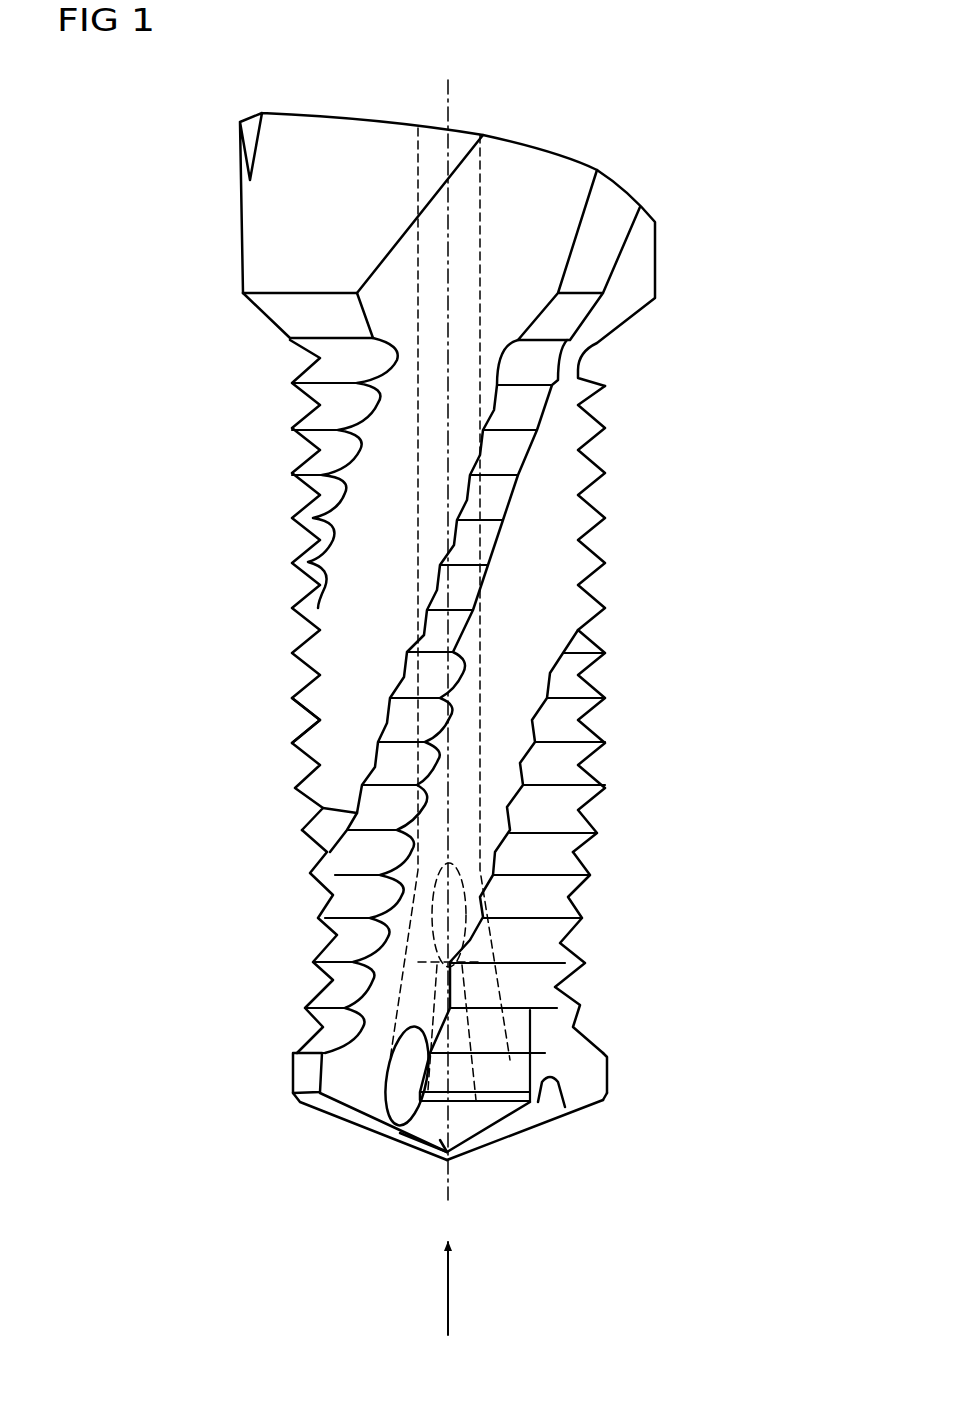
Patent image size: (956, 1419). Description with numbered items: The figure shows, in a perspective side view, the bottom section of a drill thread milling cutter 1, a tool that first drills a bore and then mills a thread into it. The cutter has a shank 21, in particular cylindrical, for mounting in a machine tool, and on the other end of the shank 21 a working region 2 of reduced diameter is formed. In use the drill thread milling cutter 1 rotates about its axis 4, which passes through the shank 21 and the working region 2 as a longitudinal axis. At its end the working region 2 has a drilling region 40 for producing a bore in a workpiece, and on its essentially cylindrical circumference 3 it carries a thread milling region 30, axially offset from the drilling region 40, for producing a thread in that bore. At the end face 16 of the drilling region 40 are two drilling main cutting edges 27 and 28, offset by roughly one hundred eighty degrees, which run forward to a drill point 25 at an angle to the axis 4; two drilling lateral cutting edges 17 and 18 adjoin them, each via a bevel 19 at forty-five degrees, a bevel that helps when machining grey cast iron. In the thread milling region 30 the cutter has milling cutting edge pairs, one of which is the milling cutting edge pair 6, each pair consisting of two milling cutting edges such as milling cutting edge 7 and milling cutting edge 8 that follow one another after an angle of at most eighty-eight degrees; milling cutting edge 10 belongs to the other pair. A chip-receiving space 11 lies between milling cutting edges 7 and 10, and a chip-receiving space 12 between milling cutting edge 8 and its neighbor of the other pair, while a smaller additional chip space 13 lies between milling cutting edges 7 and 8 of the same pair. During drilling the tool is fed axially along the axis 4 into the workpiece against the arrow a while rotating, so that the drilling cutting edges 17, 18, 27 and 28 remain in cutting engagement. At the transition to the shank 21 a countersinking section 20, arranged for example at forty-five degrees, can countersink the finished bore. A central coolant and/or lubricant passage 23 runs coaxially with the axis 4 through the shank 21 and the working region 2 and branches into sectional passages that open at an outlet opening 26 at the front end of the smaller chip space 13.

The drill thread milling cutter 1 is at (167, 134).
The working region 2 is at (272, 688).
The cylindrical circumference 3 is at (289, 738).
The axis 4 is at (450, 1183).
The milling cutting edge pair 6 is at (320, 918).
The milling cutting edge 7 is at (520, 770).
The milling cutting edge 8 is at (355, 813).
The milling cutting edge 10 is at (580, 1003).
The chip-receiving space 11 is at (580, 1077).
The chip-receiving space 12 is at (383, 632).
The additional chip space 13 is at (520, 583).
The end face 16 is at (405, 1156).
The drilling lateral cutting edge 17 is at (293, 1072).
The drilling lateral cutting edge 18 is at (607, 1067).
The bevel 19 is at (297, 1100).
The countersinking section 20 is at (262, 322).
The shank 21 is at (292, 238).
The coolant and/or lubricant passage 23 is at (465, 240).
The drill point 25 is at (440, 1143).
The outlet opening 26 is at (403, 1087).
The drilling main cutting edge 27 is at (380, 1133).
The drilling main cutting edge 28 is at (525, 1135).
The thread milling region 30 is at (560, 675).
The drilling region 40 is at (542, 1110).
The arrow a is at (452, 1307).